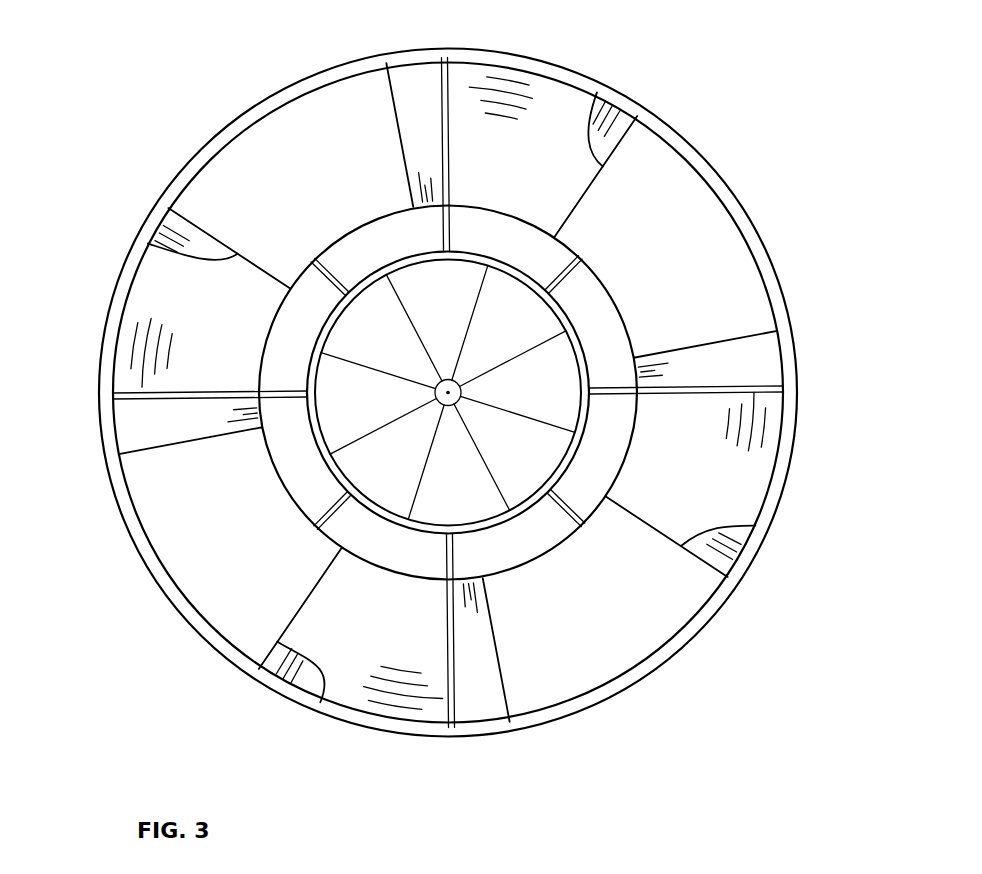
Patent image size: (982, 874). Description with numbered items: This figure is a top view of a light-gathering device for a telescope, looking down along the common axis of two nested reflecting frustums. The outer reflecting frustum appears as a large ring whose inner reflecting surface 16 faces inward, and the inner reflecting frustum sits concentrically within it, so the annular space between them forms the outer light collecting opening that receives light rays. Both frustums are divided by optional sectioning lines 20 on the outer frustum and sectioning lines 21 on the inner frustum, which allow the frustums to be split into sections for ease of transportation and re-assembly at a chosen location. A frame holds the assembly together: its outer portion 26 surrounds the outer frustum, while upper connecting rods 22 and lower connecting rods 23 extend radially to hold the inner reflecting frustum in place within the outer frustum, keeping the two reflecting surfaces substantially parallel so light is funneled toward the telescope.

The inner reflecting surface 16 is at (556, 130).
The sectioning lines 20 is at (372, 78).
The sectioning lines 21 is at (380, 368).
The upper connecting rods 22 is at (448, 84).
The lower connecting rods 23 is at (318, 280).
The outer portion 26 is at (744, 226).